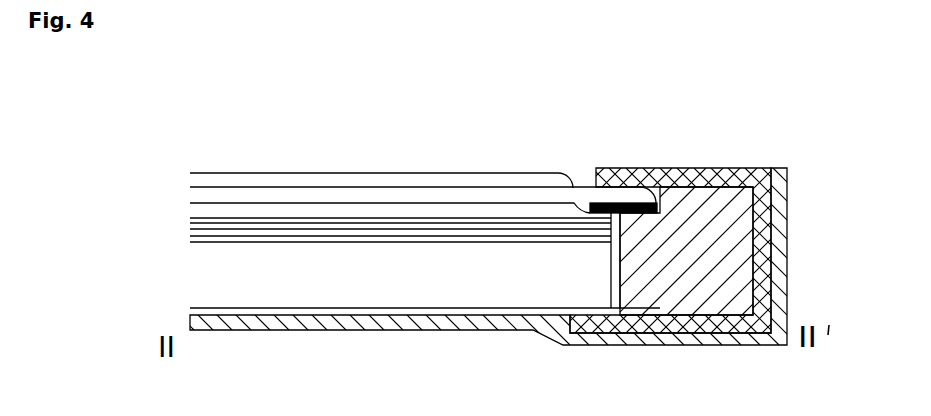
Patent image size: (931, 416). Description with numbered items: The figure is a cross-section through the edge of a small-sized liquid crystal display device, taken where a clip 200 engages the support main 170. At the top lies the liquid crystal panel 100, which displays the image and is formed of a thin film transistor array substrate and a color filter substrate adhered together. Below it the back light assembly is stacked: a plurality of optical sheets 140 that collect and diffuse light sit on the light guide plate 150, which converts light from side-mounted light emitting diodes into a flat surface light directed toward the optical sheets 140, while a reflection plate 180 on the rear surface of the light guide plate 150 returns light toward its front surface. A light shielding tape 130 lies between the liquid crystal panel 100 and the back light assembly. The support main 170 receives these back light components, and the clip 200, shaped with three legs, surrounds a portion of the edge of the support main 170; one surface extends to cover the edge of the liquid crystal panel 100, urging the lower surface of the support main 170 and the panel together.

The liquid crystal panel 100 is at (186, 158).
The light shielding tape 130 is at (586, 211).
The optical sheets 140 is at (187, 215).
The light guide plate 150 is at (195, 274).
The support main 170 is at (723, 247).
The reflection plate 180 is at (192, 315).
The clips 200 is at (717, 167).